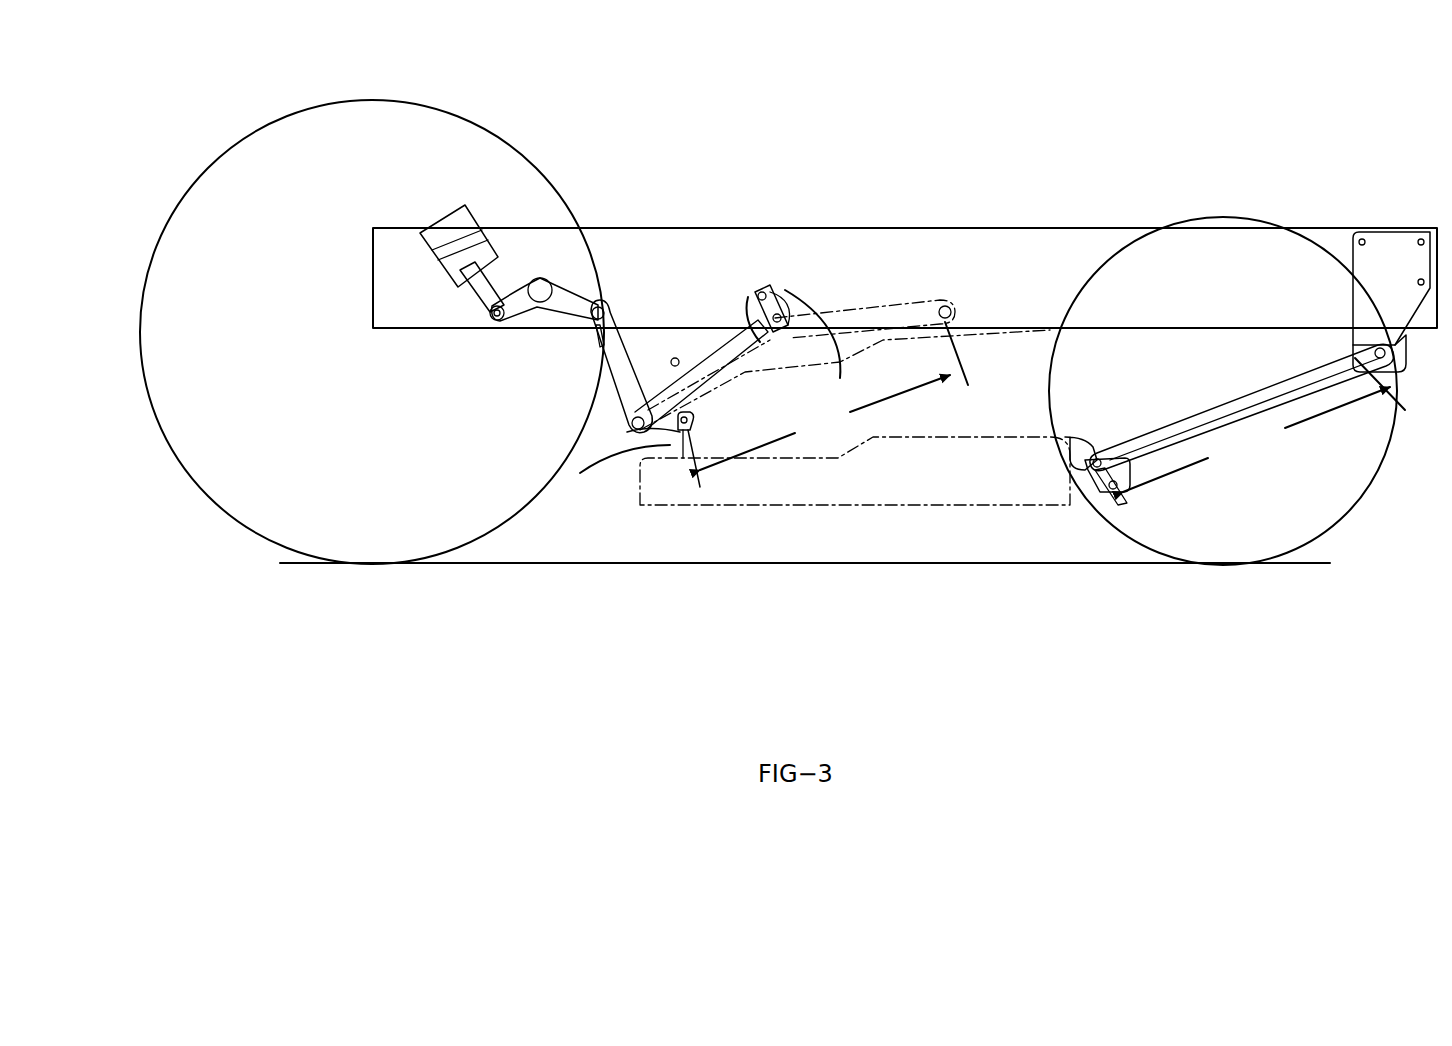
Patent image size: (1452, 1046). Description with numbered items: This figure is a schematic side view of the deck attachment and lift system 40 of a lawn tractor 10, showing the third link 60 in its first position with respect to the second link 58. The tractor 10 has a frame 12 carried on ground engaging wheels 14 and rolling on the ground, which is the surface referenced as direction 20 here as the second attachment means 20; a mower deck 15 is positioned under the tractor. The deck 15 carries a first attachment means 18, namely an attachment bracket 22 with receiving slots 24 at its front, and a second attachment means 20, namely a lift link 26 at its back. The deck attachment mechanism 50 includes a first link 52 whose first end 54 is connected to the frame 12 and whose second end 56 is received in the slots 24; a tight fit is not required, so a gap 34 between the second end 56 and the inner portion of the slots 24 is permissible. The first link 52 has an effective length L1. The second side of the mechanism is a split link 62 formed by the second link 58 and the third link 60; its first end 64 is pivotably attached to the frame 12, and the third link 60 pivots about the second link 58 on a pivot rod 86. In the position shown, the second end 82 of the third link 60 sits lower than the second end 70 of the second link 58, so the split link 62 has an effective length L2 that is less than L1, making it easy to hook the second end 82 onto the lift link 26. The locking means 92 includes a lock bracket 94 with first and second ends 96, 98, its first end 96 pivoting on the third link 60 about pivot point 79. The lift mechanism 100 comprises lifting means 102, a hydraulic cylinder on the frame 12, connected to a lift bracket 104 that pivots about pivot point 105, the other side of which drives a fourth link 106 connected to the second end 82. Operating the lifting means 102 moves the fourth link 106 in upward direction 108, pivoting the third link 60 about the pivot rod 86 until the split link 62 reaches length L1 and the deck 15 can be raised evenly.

The tractor 10 is at (968, 155).
The frame 12 is at (1058, 242).
The ground engaging wheels 14 is at (245, 508).
The mower deck 15 is at (793, 498).
The first attachment means 18 is at (1085, 360).
The second attachment means 20 is at (603, 508).
The attachment bracket 22 is at (1095, 492).
The receiving slot 24 is at (1078, 438).
The lift link 26 is at (616, 469).
The gap 34 is at (1120, 500).
The deck attachment and lift system 40 is at (1013, 203).
The deck attachment mechanism 50 is at (755, 212).
The first link 52 is at (1300, 385).
The first end 54 is at (1357, 362).
The second end 56 is at (1110, 447).
The second link 58 is at (898, 320).
The third link 60 is at (727, 337).
The split link 62 is at (735, 250).
The first end 64 is at (945, 305).
The second end 70 is at (652, 408).
The pivot point 79 is at (766, 292).
The second end 82 is at (690, 418).
The pivot rod 86 is at (675, 358).
The locking means 92 is at (824, 223).
The lock bracket 94 is at (790, 316).
The first end 96 is at (772, 300).
The second end 98 is at (810, 342).
The lift mechanism 100 is at (357, 294).
The lifting means 102 is at (455, 228).
The lift bracket 104 is at (580, 330).
The pivot point 105 is at (545, 282).
The fourth link 106 is at (612, 365).
The upward direction 108 is at (632, 332).
The effective length L1 is at (1264, 425).
The effective length L2 is at (834, 396).